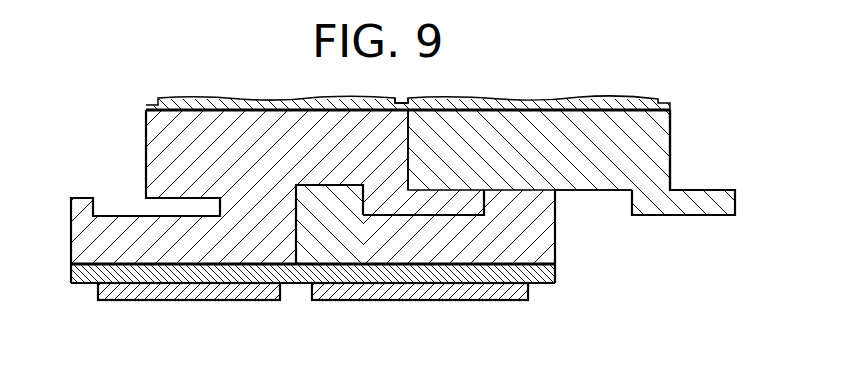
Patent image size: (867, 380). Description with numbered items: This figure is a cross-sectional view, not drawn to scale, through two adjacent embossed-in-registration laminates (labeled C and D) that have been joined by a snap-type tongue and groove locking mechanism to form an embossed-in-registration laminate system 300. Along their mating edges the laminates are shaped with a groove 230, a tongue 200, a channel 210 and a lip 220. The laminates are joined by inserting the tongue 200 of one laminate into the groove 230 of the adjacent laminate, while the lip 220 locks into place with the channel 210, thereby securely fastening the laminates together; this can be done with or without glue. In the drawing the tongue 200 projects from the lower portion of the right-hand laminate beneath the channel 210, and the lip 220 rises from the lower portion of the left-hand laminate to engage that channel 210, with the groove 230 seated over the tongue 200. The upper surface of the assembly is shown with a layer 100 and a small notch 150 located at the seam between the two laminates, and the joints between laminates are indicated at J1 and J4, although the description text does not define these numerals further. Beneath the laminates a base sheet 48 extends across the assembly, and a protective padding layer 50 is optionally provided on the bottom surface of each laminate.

The embossed-in-registration laminate system 300 is at (134, 89).
The coating layer 100 is at (278, 97).
The notch in coating 150 is at (410, 98).
The joint between C and D J1 is at (410, 122).
The joint at right side of D J4 is at (670, 140).
The tongue 200 is at (665, 205).
The channel 210 is at (600, 193).
The groove 230 is at (452, 215).
The lip 220 is at (323, 185).
The base sheet 48 is at (226, 276).
The protective padding layer 50 is at (110, 302).